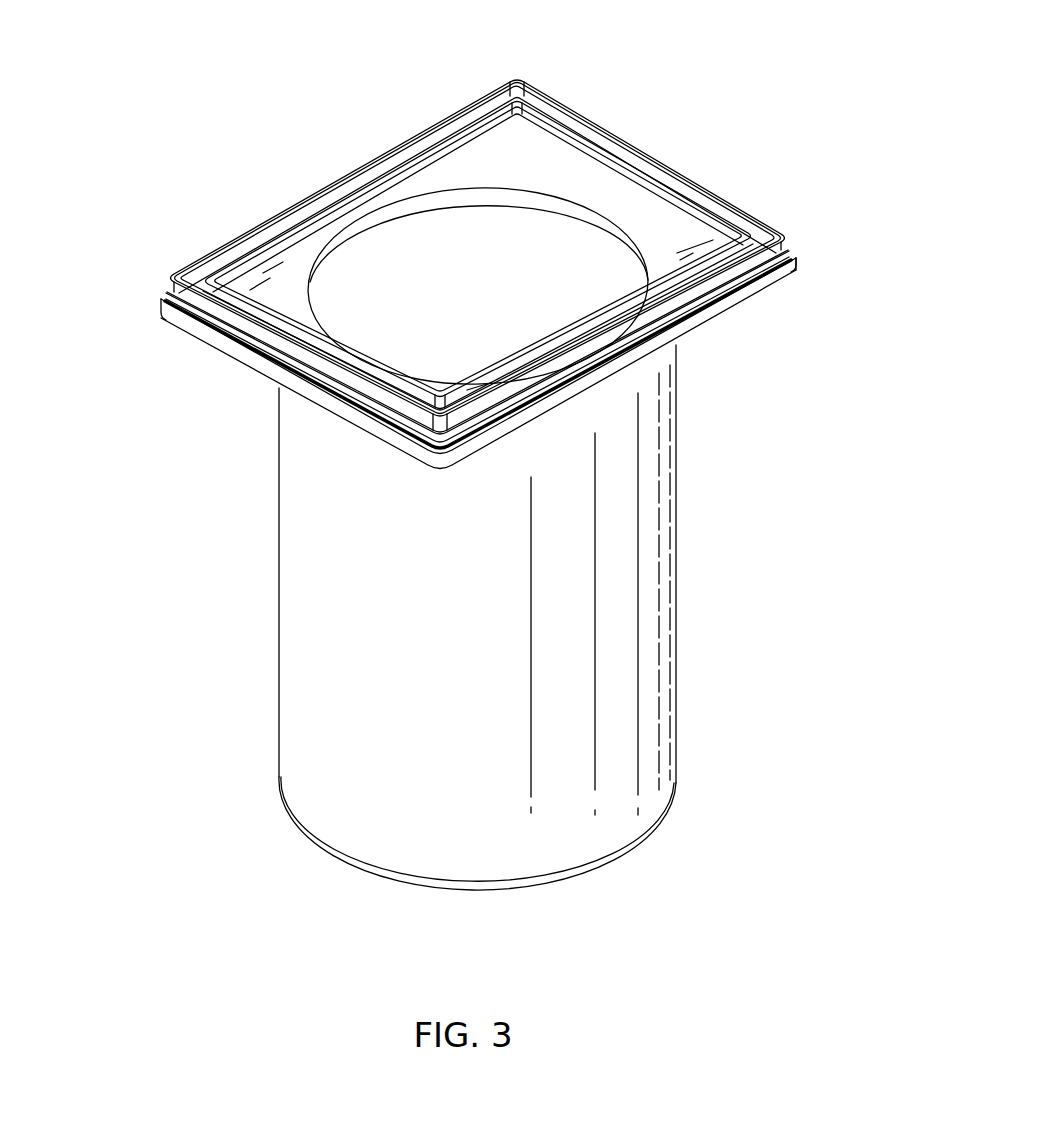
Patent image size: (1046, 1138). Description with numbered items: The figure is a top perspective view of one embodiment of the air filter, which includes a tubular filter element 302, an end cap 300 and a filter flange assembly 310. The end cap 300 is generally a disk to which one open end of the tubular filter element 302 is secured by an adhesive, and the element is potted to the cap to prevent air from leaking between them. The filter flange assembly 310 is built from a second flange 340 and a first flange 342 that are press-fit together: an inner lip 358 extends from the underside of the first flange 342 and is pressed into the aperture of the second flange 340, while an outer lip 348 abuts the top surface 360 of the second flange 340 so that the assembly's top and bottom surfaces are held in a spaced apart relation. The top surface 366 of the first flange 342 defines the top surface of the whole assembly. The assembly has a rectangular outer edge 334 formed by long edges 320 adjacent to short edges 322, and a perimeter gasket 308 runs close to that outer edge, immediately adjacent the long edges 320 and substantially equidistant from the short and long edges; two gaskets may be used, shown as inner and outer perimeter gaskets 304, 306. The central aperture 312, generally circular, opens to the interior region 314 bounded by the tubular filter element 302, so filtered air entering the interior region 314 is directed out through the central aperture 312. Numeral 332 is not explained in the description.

The end cap 300 is at (622, 852).
The tubular filter element 302 is at (623, 605).
The inner perimeter gasket 304 is at (278, 232).
The outer perimeter gasket 306 is at (165, 279).
The perimeter gasket 308 is at (450, 130).
The filter flange assembly 310 is at (460, 253).
The central aperture 312 is at (540, 210).
The interior region 314 is at (375, 312).
The long edges 320 is at (343, 175).
The short edges 322 is at (640, 148).
The top surface 332 is at (643, 227).
The rectangular outer edge 334 is at (768, 267).
The second flange 340 is at (227, 362).
The first flange 342 is at (318, 393).
The outer lip 348 is at (210, 322).
The inner lip 358 is at (523, 205).
The top surface of second flange 360 is at (163, 293).
The top surface of first flange 366 is at (555, 178).